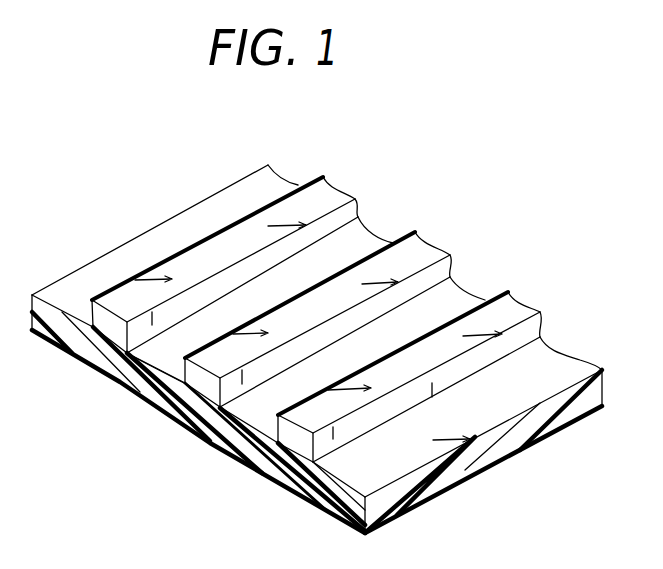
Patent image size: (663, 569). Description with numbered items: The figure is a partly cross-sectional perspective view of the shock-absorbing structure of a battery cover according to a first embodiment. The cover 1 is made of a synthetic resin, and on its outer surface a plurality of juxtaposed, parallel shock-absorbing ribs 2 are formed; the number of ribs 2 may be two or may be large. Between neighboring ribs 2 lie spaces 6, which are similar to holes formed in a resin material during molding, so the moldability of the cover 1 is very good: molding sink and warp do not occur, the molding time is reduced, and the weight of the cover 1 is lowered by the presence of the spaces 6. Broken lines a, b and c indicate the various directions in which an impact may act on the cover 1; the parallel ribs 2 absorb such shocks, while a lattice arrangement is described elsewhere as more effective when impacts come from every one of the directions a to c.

The battery cover 1 is at (212, 444).
The shock-absorbing ribs 2 is at (430, 243).
The spaces 6 is at (158, 361).
The impact direction a is at (280, 293).
The impact direction b is at (325, 278).
The impact direction c is at (365, 318).